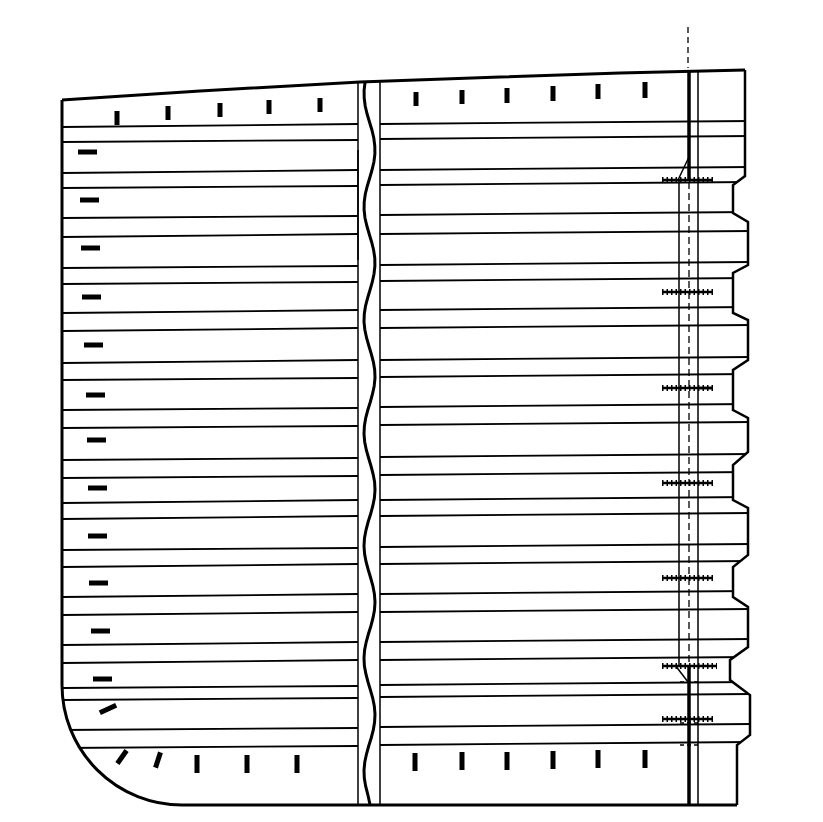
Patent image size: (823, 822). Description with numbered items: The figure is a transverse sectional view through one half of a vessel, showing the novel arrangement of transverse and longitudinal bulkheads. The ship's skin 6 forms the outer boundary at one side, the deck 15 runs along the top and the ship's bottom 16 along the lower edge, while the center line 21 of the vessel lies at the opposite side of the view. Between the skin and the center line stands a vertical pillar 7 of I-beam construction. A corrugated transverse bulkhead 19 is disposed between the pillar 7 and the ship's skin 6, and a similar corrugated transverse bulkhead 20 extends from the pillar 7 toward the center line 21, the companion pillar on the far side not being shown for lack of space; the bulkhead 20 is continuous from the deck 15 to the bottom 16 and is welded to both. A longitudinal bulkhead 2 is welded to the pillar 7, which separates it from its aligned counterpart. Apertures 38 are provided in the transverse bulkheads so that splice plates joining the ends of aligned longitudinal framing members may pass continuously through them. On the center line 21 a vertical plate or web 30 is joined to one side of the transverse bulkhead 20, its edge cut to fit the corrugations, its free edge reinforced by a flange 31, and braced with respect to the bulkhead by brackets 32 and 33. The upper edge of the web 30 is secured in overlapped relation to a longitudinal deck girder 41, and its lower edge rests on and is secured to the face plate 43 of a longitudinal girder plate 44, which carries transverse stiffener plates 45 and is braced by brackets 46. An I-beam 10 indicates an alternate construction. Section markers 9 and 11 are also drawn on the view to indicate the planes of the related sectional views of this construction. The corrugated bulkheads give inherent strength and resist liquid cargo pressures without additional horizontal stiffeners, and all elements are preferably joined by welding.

The longitudinal bulkhead 2 is at (378, 304).
The ship's skin 6 is at (60, 252).
The vertical pillar 7 is at (380, 207).
The section line 9 is at (713, 70).
The I-beam 10 is at (108, 100).
The section line 11 is at (345, 402).
The deck 15 is at (402, 82).
The ship's bottom 16 is at (412, 805).
The transverse bulkhead 19 is at (270, 242).
The transverse bulkhead 20 is at (578, 245).
The center line 21 is at (688, 43).
The vertical plate 30 is at (688, 342).
The flange 31 is at (690, 366).
The bracket 32 is at (668, 390).
The bracket 33 is at (714, 396).
The aperture 38 is at (267, 109).
The longitudinal deck girder 41 is at (686, 104).
The face plate 43 is at (664, 668).
The longitudinal girder plate 44 is at (686, 800).
The transverse stiffener plate 45 is at (699, 770).
The bracket 46 is at (700, 720).